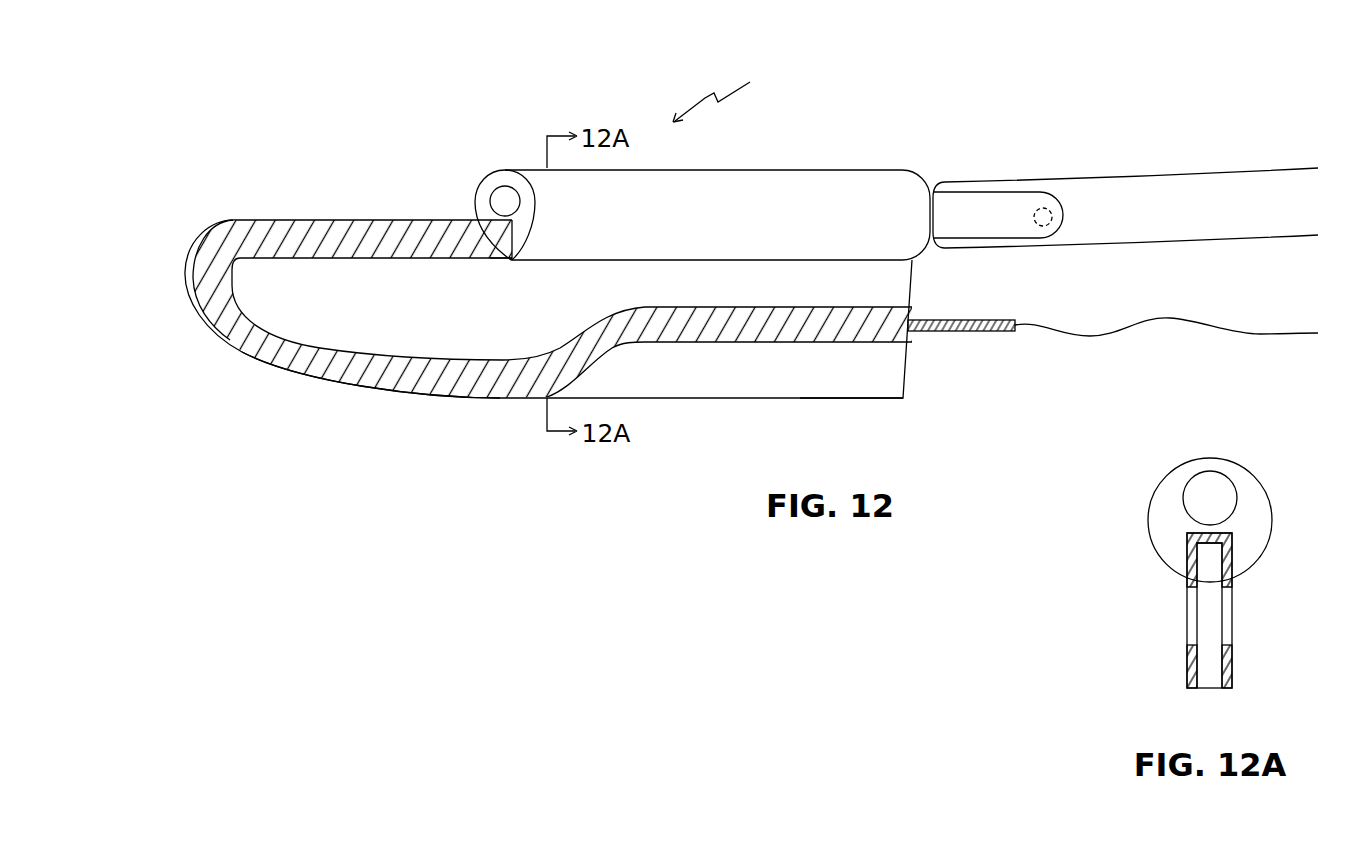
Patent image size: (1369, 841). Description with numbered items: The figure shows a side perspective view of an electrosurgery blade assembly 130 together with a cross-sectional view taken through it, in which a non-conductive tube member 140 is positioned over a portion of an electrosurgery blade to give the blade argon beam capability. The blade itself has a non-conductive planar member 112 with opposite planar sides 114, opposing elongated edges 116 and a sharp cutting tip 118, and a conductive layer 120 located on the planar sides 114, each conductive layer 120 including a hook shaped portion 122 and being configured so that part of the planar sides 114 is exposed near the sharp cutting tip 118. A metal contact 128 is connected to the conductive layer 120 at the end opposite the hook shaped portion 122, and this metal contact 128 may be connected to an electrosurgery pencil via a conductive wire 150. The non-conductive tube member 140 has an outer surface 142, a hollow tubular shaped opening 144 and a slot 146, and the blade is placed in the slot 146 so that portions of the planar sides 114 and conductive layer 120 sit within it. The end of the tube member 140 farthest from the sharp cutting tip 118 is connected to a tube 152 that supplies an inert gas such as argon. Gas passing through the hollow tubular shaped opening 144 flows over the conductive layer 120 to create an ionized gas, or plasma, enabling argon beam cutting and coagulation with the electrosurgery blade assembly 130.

In FIG. 12, the non-conductive planar member 112 is at (713, 378).
In FIG. 12A, the non-conductive planar member 112 is at (1213, 603).
In FIG. 12, the opposite planar sides 114 is at (443, 316).
In FIG. 12A, the opposite planar sides 114 is at (1196, 621).
In FIG. 12, the opposing elongated edges 116 is at (836, 400).
In FIG. 12, the sharp cutting tip 118 is at (181, 275).
In FIG. 12, the conductive layer 120 is at (607, 338).
In FIG. 12A, the conductive layer 120 is at (1225, 536).
In FIG. 12, the hook shaped portion 122 is at (356, 374).
In FIG. 12, the metal contact 128 is at (960, 332).
In FIG. 12, the electrosurgery blade assembly 130 is at (736, 93).
In FIG. 12, the non-conductive tube member 140 is at (766, 190).
In FIG. 12A, the non-conductive tube member 140 is at (1250, 495).
In FIG. 12, the outer surface 142 is at (635, 230).
In FIG. 12, the hollow tubular shaped opening 144 is at (504, 198).
In FIG. 12A, the hollow tubular shaped opening 144 is at (1200, 490).
In FIG. 12, the slot 146 is at (503, 260).
In FIG. 12, the conductive wire 150 is at (1185, 320).
In FIG. 12, the tube 152 is at (1078, 195).